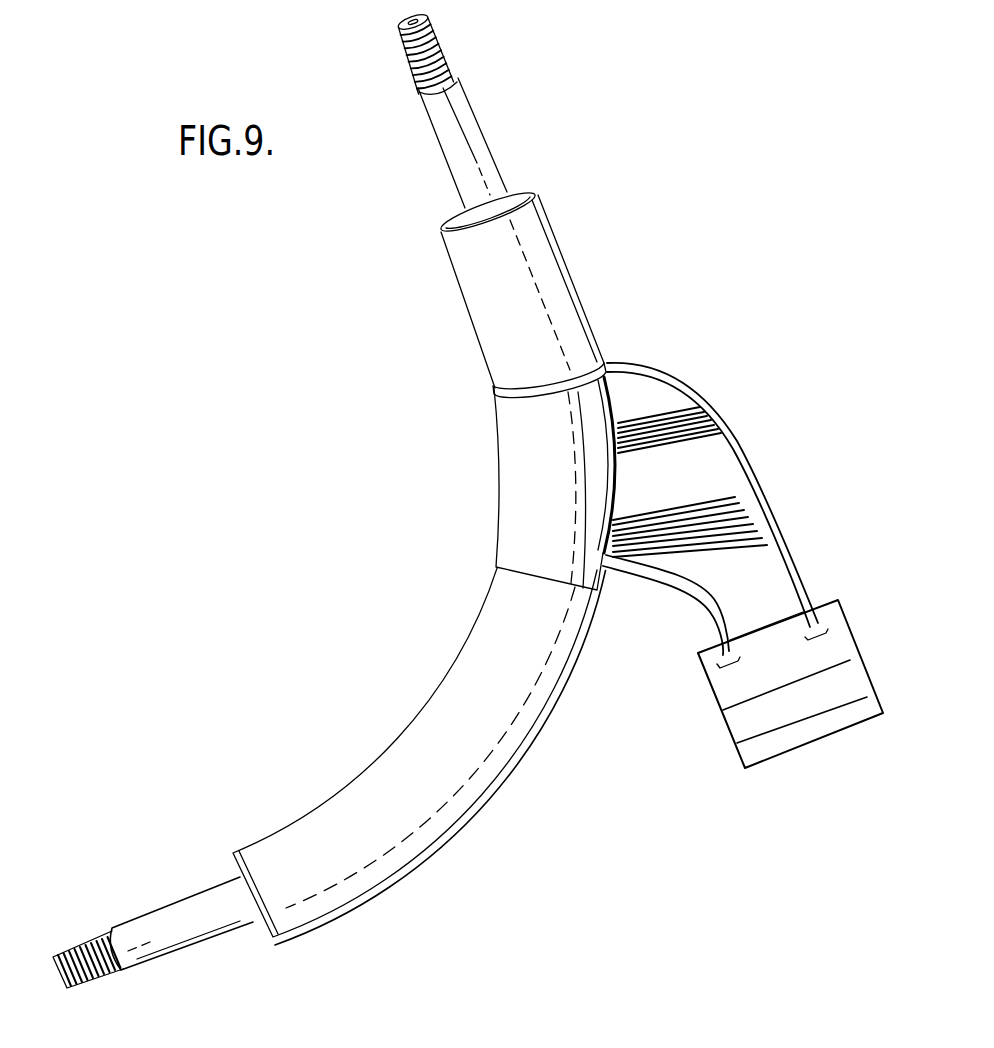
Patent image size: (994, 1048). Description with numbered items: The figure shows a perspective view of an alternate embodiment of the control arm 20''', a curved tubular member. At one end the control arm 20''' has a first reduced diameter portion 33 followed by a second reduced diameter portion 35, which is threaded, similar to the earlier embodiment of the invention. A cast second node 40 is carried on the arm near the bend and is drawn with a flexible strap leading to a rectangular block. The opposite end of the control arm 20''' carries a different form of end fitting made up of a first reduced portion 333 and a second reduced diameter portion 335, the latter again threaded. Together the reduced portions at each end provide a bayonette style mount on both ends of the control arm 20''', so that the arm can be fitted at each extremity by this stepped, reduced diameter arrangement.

The second reduced diameter portion 335 is at (445, 47).
The first reduced portion 333 is at (485, 147).
The cast second node 40 is at (748, 475).
The control arm 20''' is at (424, 661).
The first reduced diameter portion 33 is at (203, 933).
The second reduced diameter portion 35 is at (95, 938).